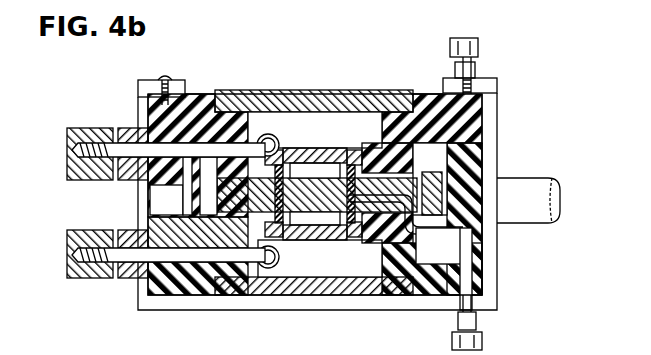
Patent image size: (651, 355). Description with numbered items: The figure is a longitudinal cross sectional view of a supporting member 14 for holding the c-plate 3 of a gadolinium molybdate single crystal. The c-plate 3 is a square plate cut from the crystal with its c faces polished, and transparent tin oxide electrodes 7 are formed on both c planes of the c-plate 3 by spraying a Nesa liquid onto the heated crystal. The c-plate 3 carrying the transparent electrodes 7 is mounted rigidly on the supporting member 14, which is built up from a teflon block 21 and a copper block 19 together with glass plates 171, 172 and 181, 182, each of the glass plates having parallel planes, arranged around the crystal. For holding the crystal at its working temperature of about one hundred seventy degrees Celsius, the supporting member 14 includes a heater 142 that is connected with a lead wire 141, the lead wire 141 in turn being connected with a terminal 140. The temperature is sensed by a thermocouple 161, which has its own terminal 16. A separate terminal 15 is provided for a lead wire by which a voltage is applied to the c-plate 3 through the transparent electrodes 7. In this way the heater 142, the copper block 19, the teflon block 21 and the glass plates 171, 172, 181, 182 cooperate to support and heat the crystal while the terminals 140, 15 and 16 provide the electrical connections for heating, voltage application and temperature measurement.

The c-plate 3 is at (315, 194).
The transparent electrodes 7 is at (293, 178).
The supporting member 14 is at (488, 118).
The terminal 140 is at (478, 63).
The lead wire 141 is at (483, 157).
The heater 142 is at (311, 233).
The terminal 15 is at (72, 182).
The terminal 16 is at (483, 341).
The thermocouple 161 is at (391, 190).
The glass plate 171 is at (290, 240).
The glass plate 172 is at (318, 148).
The glass plate 181 is at (292, 288).
The glass plate 182 is at (293, 100).
The copper block 19 is at (350, 158).
The teflon block 21 is at (200, 97).